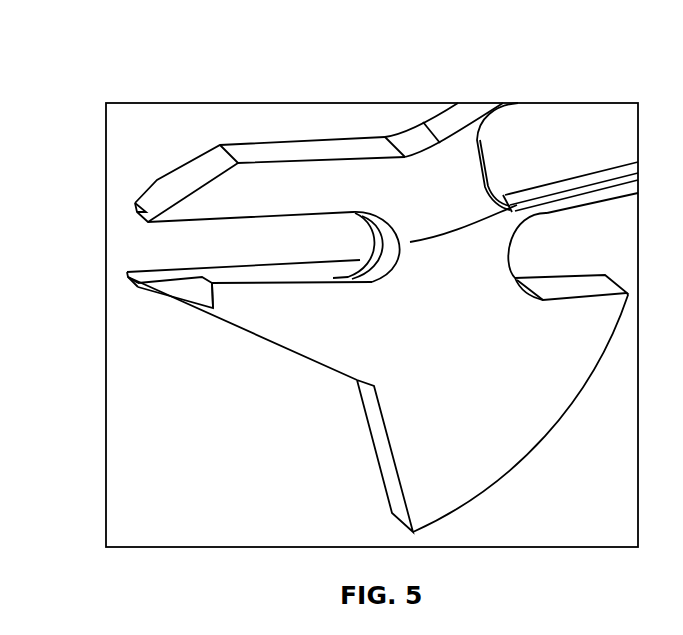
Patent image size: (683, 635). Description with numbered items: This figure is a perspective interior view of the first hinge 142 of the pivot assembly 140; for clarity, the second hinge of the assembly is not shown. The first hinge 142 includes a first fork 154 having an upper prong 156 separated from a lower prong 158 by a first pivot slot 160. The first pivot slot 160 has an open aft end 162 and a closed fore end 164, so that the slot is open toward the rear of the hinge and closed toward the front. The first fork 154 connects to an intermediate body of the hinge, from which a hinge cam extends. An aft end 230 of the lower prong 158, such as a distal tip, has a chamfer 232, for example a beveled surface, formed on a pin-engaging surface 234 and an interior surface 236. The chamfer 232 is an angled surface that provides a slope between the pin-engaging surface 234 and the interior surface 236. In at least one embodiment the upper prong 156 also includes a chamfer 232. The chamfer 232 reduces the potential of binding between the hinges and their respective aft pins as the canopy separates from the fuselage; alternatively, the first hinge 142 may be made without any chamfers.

The pivot assembly 140 is at (256, 50).
The first hinge 142 is at (157, 133).
The first fork 154 is at (324, 121).
The upper prong 156 is at (253, 153).
The lower prong 158 is at (253, 335).
The first pivot slot 160 is at (342, 240).
The open aft end 162 is at (141, 255).
The closed fore end 164 is at (513, 196).
The aft end 230 is at (128, 285).
The chamfer 232 is at (182, 222).
The pin-engaging surface 234 is at (183, 285).
The interior surface 236 is at (213, 310).